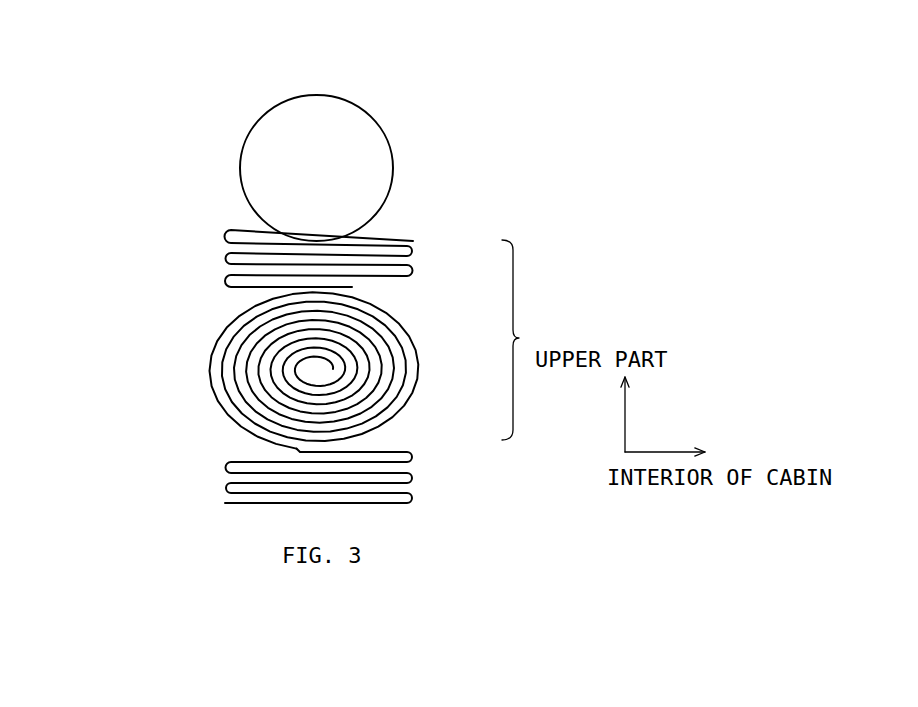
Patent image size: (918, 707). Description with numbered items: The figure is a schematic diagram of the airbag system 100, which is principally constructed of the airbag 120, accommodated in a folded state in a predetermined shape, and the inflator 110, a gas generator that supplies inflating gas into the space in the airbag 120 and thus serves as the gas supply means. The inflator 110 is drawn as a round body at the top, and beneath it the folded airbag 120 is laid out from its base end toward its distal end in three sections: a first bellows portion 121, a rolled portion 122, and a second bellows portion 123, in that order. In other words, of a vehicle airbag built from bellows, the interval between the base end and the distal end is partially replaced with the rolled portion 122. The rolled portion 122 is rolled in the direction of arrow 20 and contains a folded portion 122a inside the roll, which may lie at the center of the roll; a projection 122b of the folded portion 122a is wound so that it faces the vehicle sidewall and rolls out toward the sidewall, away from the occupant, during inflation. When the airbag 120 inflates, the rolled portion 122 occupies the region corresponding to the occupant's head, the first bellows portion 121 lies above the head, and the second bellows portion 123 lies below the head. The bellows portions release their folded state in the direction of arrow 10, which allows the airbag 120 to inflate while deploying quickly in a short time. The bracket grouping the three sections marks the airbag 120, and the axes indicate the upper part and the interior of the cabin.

The airbag system 100 is at (437, 98).
The inflator 110 is at (392, 170).
The airbag 120 is at (537, 340).
The first bellows portion 121 is at (415, 250).
The rolled portion 122 is at (418, 337).
The folded portion 122a is at (333, 362).
The projection 122b is at (310, 388).
The second bellows portion 123 is at (413, 452).
The arrow 10 is at (183, 445).
The arrow 20 is at (122, 330).